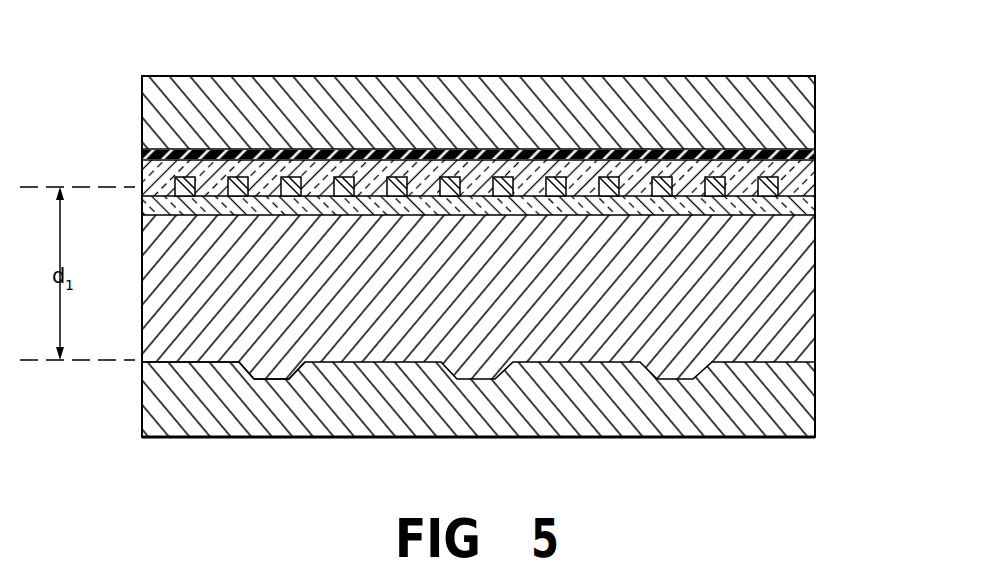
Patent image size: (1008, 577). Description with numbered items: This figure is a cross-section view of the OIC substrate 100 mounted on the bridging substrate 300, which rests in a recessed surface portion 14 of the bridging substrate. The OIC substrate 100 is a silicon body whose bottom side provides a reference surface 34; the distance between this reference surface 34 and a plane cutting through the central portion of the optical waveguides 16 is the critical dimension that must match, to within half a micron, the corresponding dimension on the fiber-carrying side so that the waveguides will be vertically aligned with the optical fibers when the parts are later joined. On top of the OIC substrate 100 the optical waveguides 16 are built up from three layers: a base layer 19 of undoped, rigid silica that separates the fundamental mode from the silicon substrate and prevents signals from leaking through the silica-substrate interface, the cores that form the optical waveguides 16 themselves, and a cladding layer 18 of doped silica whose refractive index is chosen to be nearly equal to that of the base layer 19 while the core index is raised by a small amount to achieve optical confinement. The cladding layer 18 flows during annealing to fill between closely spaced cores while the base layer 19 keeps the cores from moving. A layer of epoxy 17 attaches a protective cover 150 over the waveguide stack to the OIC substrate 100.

The protective cover 150 is at (812, 92).
The epoxy 17 is at (142, 155).
The cladding layer 18 is at (815, 164).
The optical waveguide 16 is at (470, 196).
The base layer 19 is at (815, 207).
The OIC substrate 100 is at (814, 282).
The bridging substrate 300 is at (814, 415).
The reference surface 34 is at (152, 362).
The recessed surface portion 14 is at (153, 362).